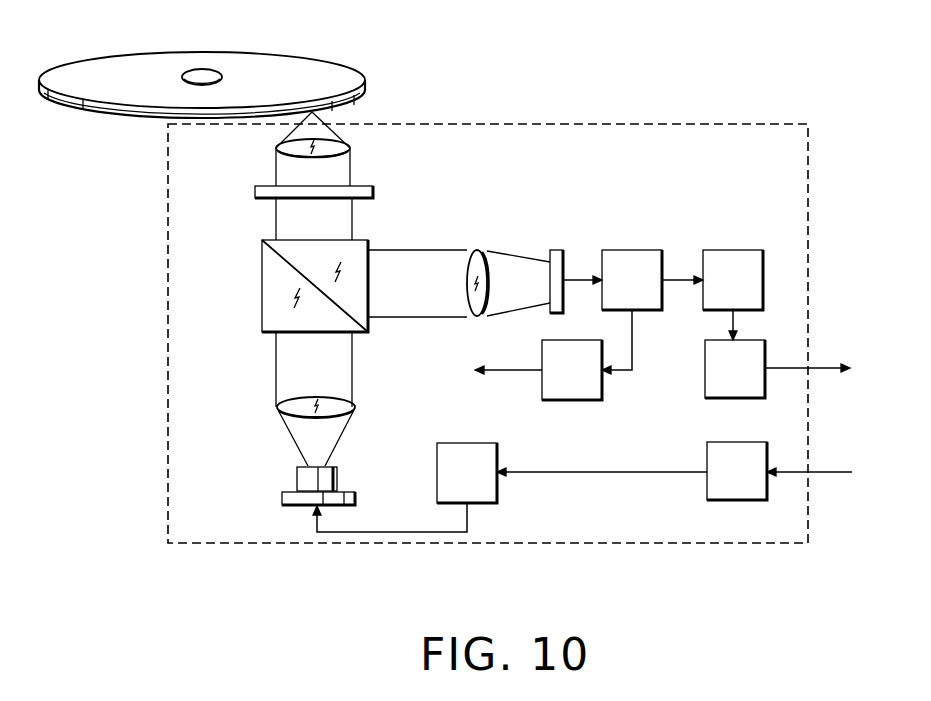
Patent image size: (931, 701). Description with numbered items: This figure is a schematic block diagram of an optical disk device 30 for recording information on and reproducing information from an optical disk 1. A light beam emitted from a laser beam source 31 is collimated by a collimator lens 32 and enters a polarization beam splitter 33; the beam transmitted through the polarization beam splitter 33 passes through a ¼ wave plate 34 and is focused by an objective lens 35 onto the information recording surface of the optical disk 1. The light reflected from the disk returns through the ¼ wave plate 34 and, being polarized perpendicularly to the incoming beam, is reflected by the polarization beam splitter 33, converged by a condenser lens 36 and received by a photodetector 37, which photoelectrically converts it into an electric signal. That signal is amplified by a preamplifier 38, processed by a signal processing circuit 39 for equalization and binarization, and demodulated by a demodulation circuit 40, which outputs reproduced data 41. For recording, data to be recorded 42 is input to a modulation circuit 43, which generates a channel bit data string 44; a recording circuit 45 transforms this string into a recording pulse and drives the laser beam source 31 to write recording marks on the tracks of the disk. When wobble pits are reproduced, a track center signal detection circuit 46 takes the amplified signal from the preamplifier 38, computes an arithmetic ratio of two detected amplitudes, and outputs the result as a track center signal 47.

The optical disk 1 is at (273, 62).
The optical disk device 30 is at (510, 546).
The laser beam source 31 is at (340, 479).
The collimator lens 32 is at (336, 400).
The polarization beam splitter 33 is at (270, 297).
The ¼ wave plate 34 is at (258, 191).
The objective lens 35 is at (352, 149).
The condenser lens 36 is at (480, 248).
The photodetector 37 is at (556, 248).
The preamplifier 38 is at (633, 264).
The signal processing circuit 39 is at (733, 262).
The demodulation circuit 40 is at (712, 373).
The reproduced data 41 is at (833, 366).
The data to be recorded 42 is at (836, 468).
The modulation circuit 43 is at (715, 455).
The channel bit data string 44 is at (557, 470).
The recording circuit 45 is at (465, 458).
The track center signal detection circuit 46 is at (590, 390).
The track center signal 47 is at (515, 368).